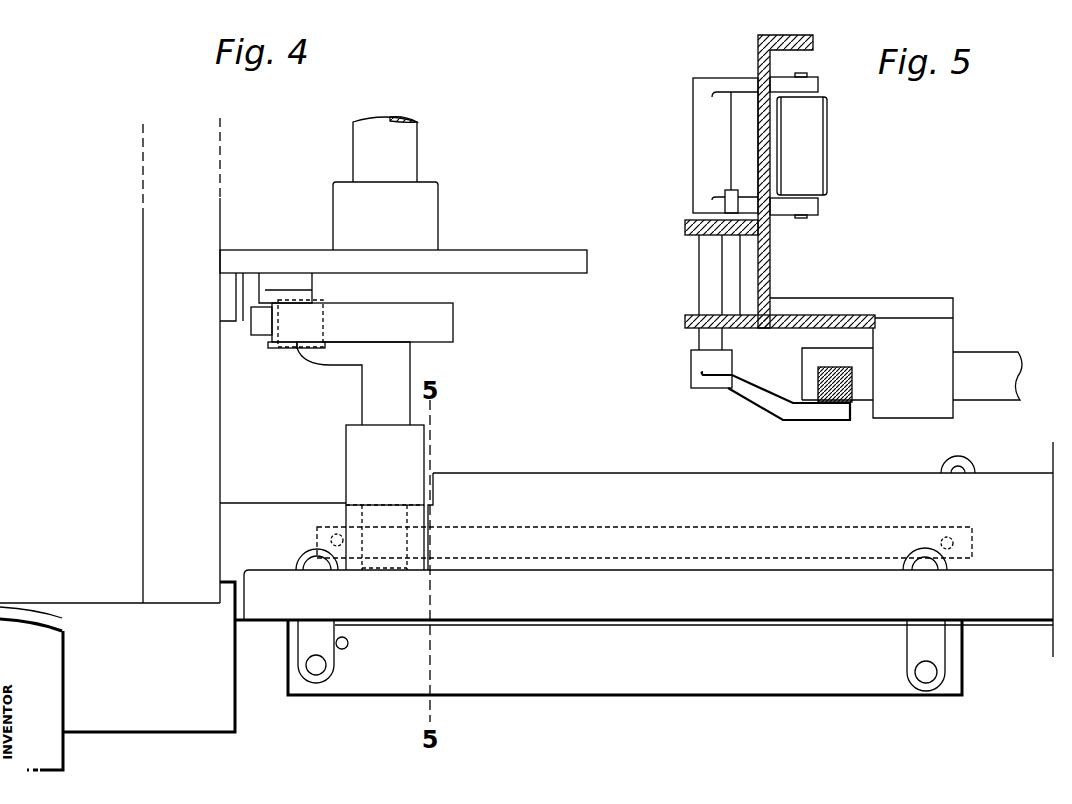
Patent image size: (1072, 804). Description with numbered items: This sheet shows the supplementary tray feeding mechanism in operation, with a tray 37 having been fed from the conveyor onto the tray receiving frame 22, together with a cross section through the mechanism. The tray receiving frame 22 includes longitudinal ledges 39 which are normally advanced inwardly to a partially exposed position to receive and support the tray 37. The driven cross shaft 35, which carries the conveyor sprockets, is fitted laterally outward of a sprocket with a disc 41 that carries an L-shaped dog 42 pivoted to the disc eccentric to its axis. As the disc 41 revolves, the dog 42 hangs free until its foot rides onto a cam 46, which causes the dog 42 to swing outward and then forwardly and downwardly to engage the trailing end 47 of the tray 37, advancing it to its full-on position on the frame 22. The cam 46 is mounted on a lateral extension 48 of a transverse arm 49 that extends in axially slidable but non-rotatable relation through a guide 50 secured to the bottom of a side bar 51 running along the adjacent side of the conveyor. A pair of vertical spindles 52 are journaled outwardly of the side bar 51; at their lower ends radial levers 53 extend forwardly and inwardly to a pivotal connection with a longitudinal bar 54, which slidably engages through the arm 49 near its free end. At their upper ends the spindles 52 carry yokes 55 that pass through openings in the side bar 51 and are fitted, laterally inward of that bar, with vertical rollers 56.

In FIG. 4, the tray receiving frame 22 is at (72, 683).
In FIG. 4, the cross shaft 35 is at (407, 157).
In FIG. 4, the tray 37 is at (65, 585).
In FIG. 4, the longitudinal ledges 39 is at (147, 700).
In FIG. 4, the disc 41 is at (505, 257).
In FIG. 4, the L-shaped dog 42 is at (450, 331).
In FIG. 4, the cam 46 is at (305, 348).
In FIG. 4, the trailing end 47 is at (188, 360).
In FIG. 4, the lateral extension 48 is at (332, 357).
In FIG. 4, the transverse arm 49 is at (372, 385).
In FIG. 5, the transverse arm 49 is at (977, 370).
In FIG. 4, the guide 50 is at (363, 453).
In FIG. 5, the guide 50 is at (933, 348).
In FIG. 4, the side bar 51 is at (687, 612).
In FIG. 5, the side bar 51 is at (772, 260).
In FIG. 4, the vertical spindles 52 is at (313, 670).
In FIG. 5, the vertical spindles 52 is at (710, 263).
In FIG. 5, the radial levers 53 is at (747, 393).
In FIG. 4, the longitudinal bar 54 is at (575, 530).
In FIG. 5, the longitudinal bar 54 is at (843, 383).
In FIG. 4, the yokes 55 is at (306, 631).
In FIG. 5, the yokes 55 is at (750, 83).
In FIG. 4, the vertical rollers 56 is at (300, 558).
In FIG. 5, the vertical rollers 56 is at (812, 152).